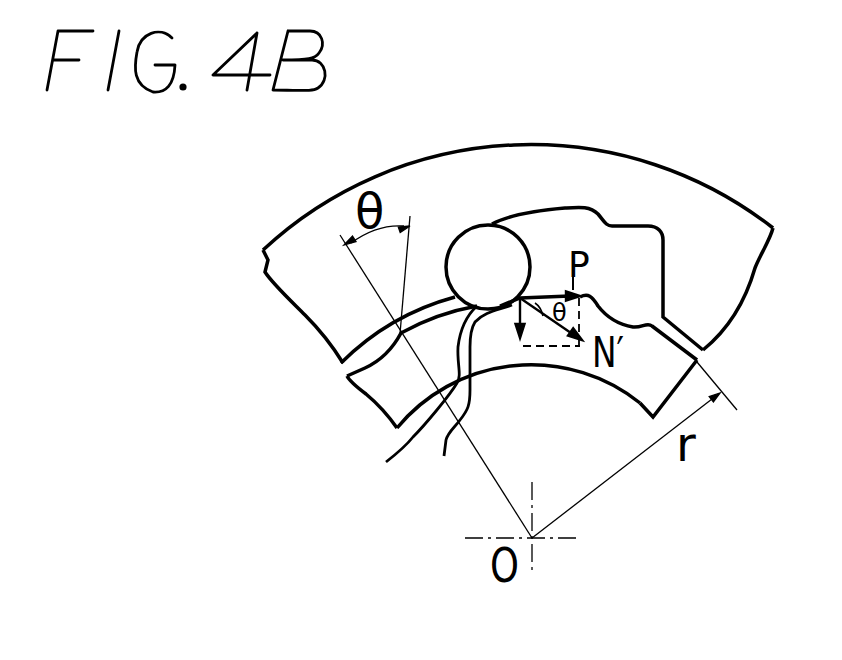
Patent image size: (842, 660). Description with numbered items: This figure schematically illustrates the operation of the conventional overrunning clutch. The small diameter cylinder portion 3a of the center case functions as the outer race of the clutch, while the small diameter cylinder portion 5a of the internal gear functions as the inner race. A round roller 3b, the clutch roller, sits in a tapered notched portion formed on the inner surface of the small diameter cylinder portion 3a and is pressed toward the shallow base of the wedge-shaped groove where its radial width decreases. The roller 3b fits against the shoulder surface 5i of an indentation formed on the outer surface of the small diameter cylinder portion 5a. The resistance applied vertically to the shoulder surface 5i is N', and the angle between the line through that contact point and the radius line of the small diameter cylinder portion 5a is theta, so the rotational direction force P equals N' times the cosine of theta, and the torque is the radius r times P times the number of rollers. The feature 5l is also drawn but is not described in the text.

The small diameter cylinder portion of the center case 3a is at (521, 176).
The round roller 3b is at (473, 253).
The small diameter cylinder portion of the internal gear 5a is at (645, 380).
The shoulder surface of the indentation 5i is at (467, 404).
The slot lip of member 5 5l is at (407, 405).